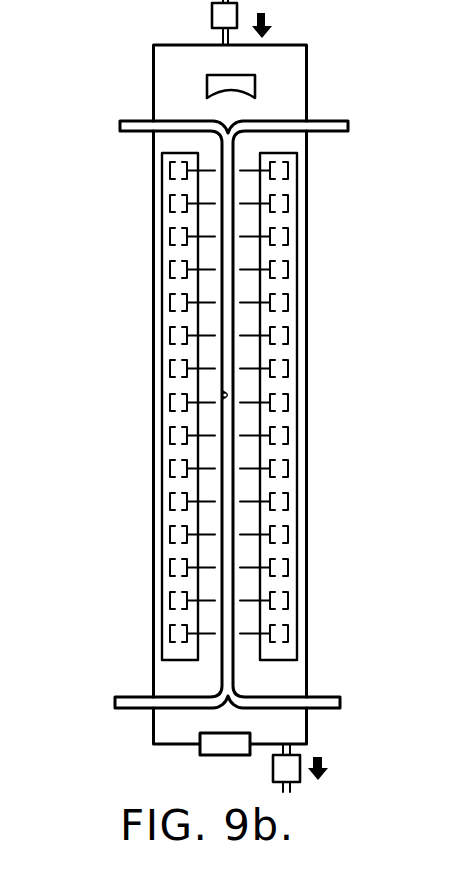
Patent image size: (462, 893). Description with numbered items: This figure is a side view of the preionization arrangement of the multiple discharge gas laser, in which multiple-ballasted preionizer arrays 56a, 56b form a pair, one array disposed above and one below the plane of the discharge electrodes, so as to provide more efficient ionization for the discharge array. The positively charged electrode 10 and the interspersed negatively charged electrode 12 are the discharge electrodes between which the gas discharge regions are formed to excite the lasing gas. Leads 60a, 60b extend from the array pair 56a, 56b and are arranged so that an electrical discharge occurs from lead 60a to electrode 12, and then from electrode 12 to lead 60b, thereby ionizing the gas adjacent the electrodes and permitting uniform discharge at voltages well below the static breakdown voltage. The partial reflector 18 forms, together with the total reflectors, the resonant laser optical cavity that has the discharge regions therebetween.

The positively charged electrode 10 is at (130, 122).
The negatively charged electrode 12 is at (348, 122).
The multiple-ballasted preionizer array 56a is at (170, 418).
The multiple-ballasted preionizer array 56b is at (283, 385).
The lead 60a is at (210, 235).
The lead 60b is at (245, 237).
The partial reflector 18 is at (200, 753).